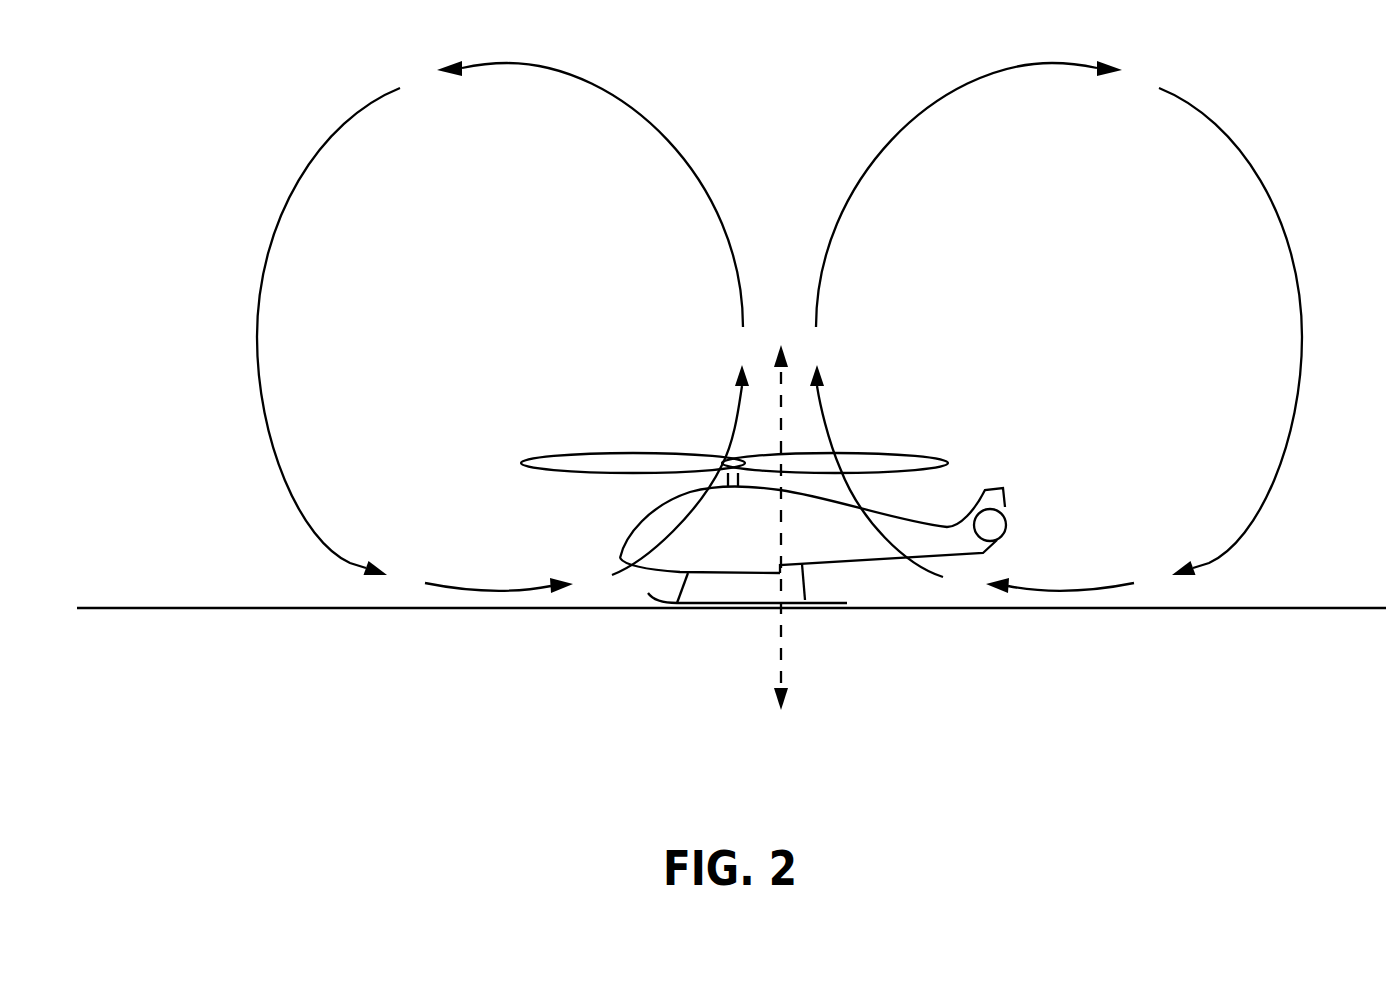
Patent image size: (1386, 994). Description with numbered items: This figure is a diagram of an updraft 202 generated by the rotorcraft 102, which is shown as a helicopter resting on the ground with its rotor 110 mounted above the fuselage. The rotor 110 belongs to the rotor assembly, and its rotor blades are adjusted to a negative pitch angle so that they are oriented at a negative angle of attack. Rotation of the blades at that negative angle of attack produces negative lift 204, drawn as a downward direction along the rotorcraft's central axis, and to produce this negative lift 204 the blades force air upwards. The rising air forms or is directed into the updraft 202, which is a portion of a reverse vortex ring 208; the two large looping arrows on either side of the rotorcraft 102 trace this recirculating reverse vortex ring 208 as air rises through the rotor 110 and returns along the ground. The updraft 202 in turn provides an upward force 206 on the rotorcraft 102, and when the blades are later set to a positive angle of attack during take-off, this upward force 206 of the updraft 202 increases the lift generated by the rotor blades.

The rotorcraft 102 is at (714, 542).
The rotor 110 is at (563, 453).
The updraft 202 is at (620, 573).
The negative lift 204 is at (781, 715).
The upward force 206 is at (781, 499).
The reverse vortex ring 208 is at (460, 226).